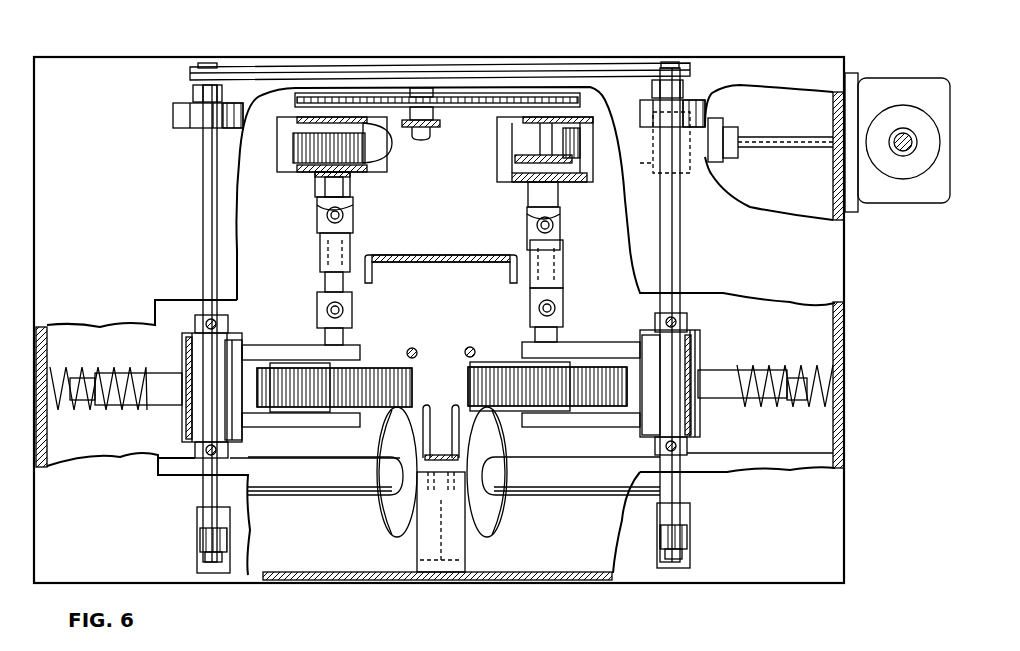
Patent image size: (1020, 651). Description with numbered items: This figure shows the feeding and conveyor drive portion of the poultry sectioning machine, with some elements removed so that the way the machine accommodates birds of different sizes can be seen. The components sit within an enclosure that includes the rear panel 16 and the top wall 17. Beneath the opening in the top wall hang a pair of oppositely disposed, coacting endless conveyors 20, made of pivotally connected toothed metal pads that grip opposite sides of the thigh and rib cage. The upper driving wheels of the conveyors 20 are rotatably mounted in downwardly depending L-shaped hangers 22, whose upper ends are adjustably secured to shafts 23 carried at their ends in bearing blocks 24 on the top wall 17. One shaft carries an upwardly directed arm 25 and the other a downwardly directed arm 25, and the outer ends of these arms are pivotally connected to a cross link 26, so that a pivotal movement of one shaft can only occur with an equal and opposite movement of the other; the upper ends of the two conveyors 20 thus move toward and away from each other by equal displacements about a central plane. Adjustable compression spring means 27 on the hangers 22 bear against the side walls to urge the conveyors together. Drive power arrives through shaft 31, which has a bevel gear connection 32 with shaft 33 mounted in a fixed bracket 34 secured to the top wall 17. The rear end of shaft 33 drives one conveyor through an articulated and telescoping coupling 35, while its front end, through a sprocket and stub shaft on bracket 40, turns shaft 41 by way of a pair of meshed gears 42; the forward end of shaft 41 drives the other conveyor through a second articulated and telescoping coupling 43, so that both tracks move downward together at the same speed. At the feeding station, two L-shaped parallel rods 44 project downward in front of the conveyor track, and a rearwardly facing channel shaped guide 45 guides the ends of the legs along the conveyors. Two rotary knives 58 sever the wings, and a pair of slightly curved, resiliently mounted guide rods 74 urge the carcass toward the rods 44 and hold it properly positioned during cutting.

The rear panel 16 is at (597, 572).
The top wall 17 is at (800, 516).
The endless conveyors 20 is at (468, 380).
The L-shaped hangers 22 is at (285, 345).
The shafts 23 is at (203, 200).
The bearing blocks 24 is at (183, 113).
The arms 25 is at (193, 90).
The cross link 26 is at (318, 66).
The compression spring means 27 is at (80, 405).
The shaft 31 is at (590, 133).
The bevel gear connection 32 is at (520, 154).
The shaft 33 is at (525, 136).
The fixed bracket 34 is at (505, 180).
The articulated and telescoping coupling 35 is at (576, 250).
The bracket 40 is at (284, 175).
The shaft 41 is at (350, 190).
The meshed gears 42 is at (386, 145).
The articulated and telescoping coupling 43 is at (362, 236).
The L-shaped parallel rods 44 is at (467, 348).
The channel shaped guide 45 is at (470, 263).
The rotary knives 58 is at (393, 520).
The guide rods 74 is at (423, 418).